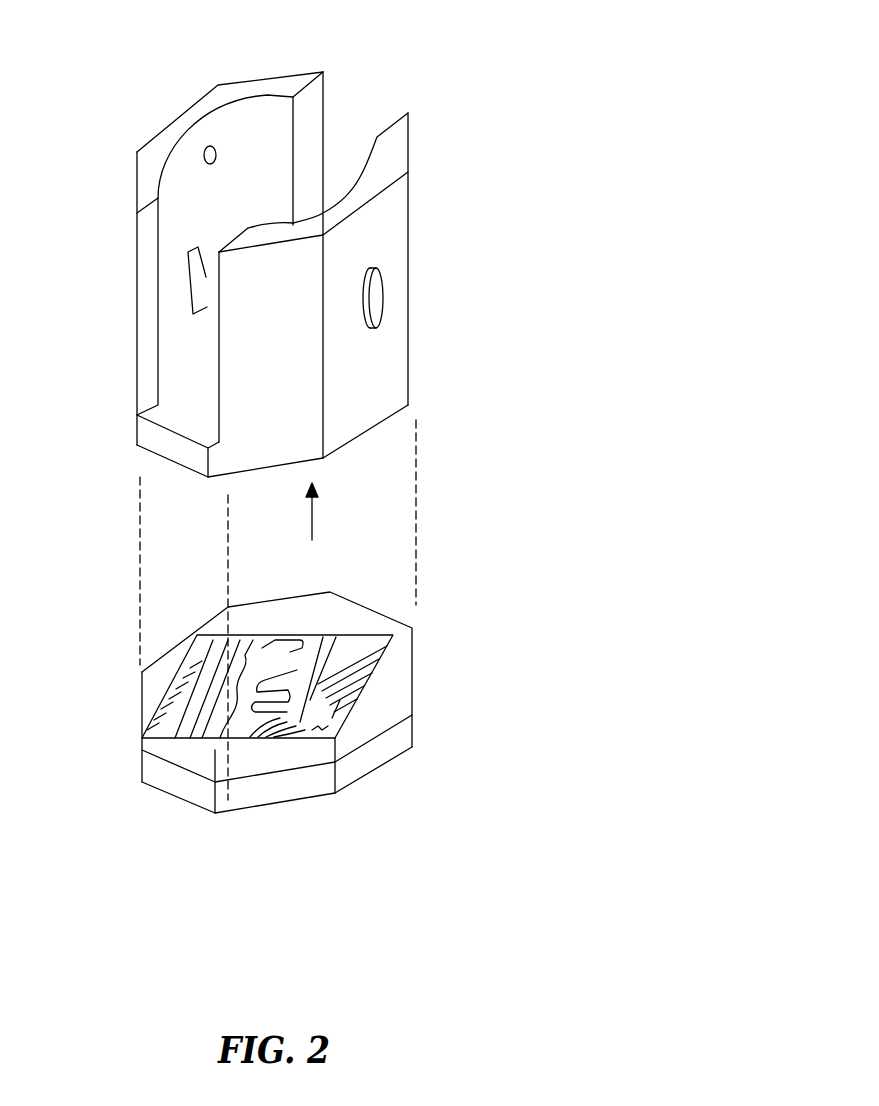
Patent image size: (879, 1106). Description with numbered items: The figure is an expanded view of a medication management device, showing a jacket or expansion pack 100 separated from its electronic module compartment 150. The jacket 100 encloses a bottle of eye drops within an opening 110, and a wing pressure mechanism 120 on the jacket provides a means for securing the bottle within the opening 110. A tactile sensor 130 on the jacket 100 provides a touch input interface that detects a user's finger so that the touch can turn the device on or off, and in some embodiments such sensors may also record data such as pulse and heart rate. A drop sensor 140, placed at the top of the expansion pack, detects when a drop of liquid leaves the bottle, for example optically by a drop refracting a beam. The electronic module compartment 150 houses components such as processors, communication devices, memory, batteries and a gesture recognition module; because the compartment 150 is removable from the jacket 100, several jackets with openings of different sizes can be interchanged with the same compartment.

The jacket 100 is at (331, 250).
The opening 110 is at (360, 98).
The wing pressure mechanism 120 is at (137, 283).
The tactile sensor 130 is at (372, 302).
The drop sensor 140 is at (208, 148).
The electronic module compartment 150 is at (140, 780).